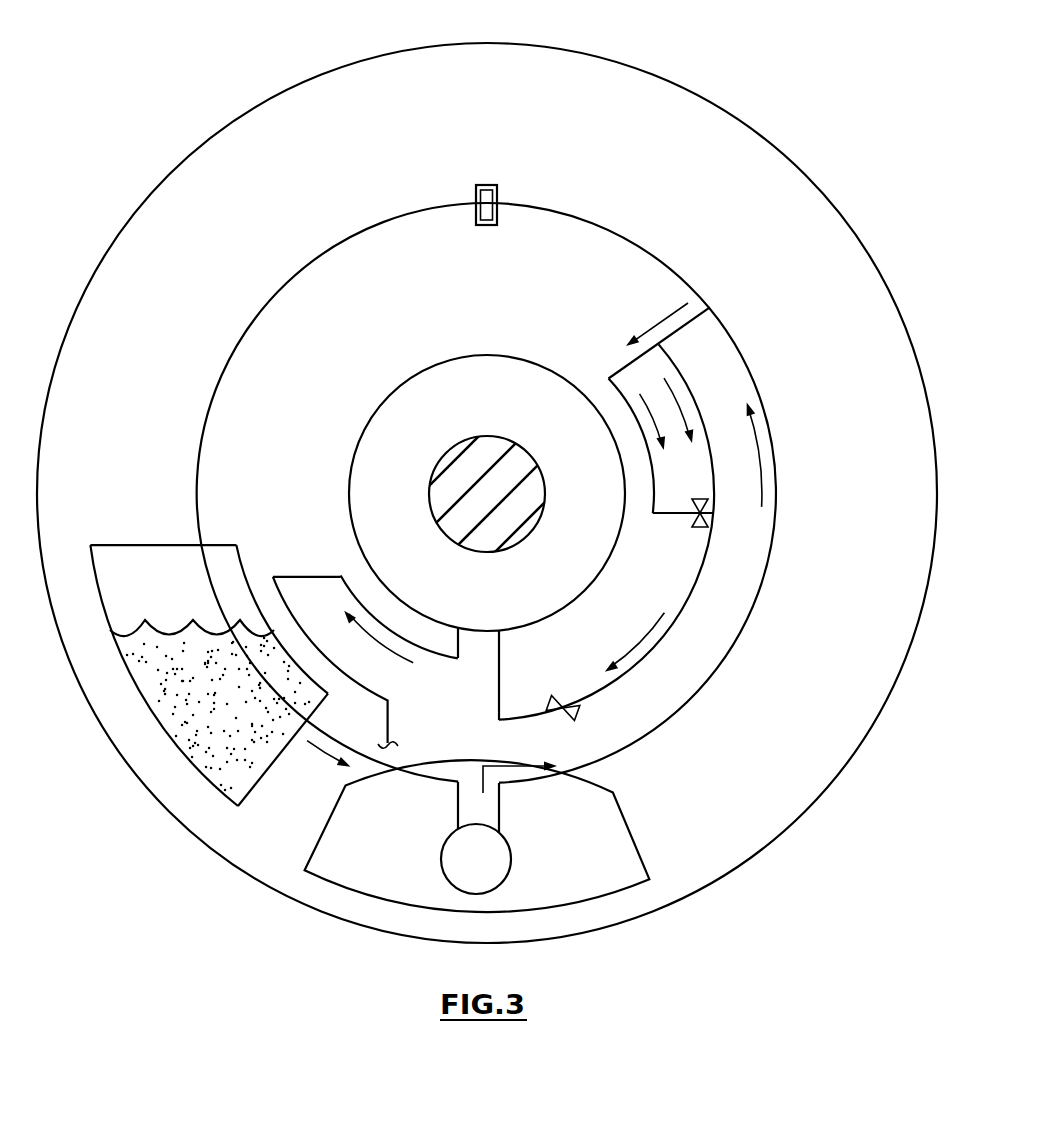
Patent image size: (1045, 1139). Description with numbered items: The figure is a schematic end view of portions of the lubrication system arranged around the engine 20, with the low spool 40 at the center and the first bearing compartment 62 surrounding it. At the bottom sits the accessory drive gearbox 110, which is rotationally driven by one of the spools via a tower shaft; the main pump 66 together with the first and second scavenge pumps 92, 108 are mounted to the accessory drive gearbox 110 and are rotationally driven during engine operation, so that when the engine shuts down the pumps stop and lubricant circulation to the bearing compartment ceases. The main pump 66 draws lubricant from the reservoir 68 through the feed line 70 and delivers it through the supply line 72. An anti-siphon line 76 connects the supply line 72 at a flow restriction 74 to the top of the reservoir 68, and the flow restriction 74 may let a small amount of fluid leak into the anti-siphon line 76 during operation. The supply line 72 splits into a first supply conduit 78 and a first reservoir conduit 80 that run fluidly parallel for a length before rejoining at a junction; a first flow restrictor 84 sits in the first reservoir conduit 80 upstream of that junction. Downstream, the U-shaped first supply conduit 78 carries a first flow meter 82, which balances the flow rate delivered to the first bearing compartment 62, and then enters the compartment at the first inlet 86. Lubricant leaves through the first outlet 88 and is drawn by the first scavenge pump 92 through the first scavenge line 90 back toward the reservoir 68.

The laundry treating appliance / drum assembly 20 is at (706, 63).
The low spool 40 is at (505, 444).
The first bearing compartment 62 is at (531, 603).
The main pump 66 is at (511, 857).
The reservoir 68 is at (198, 603).
The feed line 70 is at (397, 770).
The supply line 72 is at (688, 705).
The flow restriction 74 is at (486, 198).
The anti-siphon line 76 is at (283, 287).
The first supply conduit 78 is at (710, 552).
The first reservoir conduit 80 is at (613, 387).
The first flow meter 82 is at (577, 713).
The first flow restrictor 84 is at (700, 528).
The first inlet 86 is at (500, 630).
The first outlet 88 is at (456, 627).
The first scavenge line 90 is at (305, 577).
The first scavenge pump 92 is at (445, 840).
The second scavenge pump 108 is at (445, 877).
The accessory drive gearbox 110 is at (632, 834).